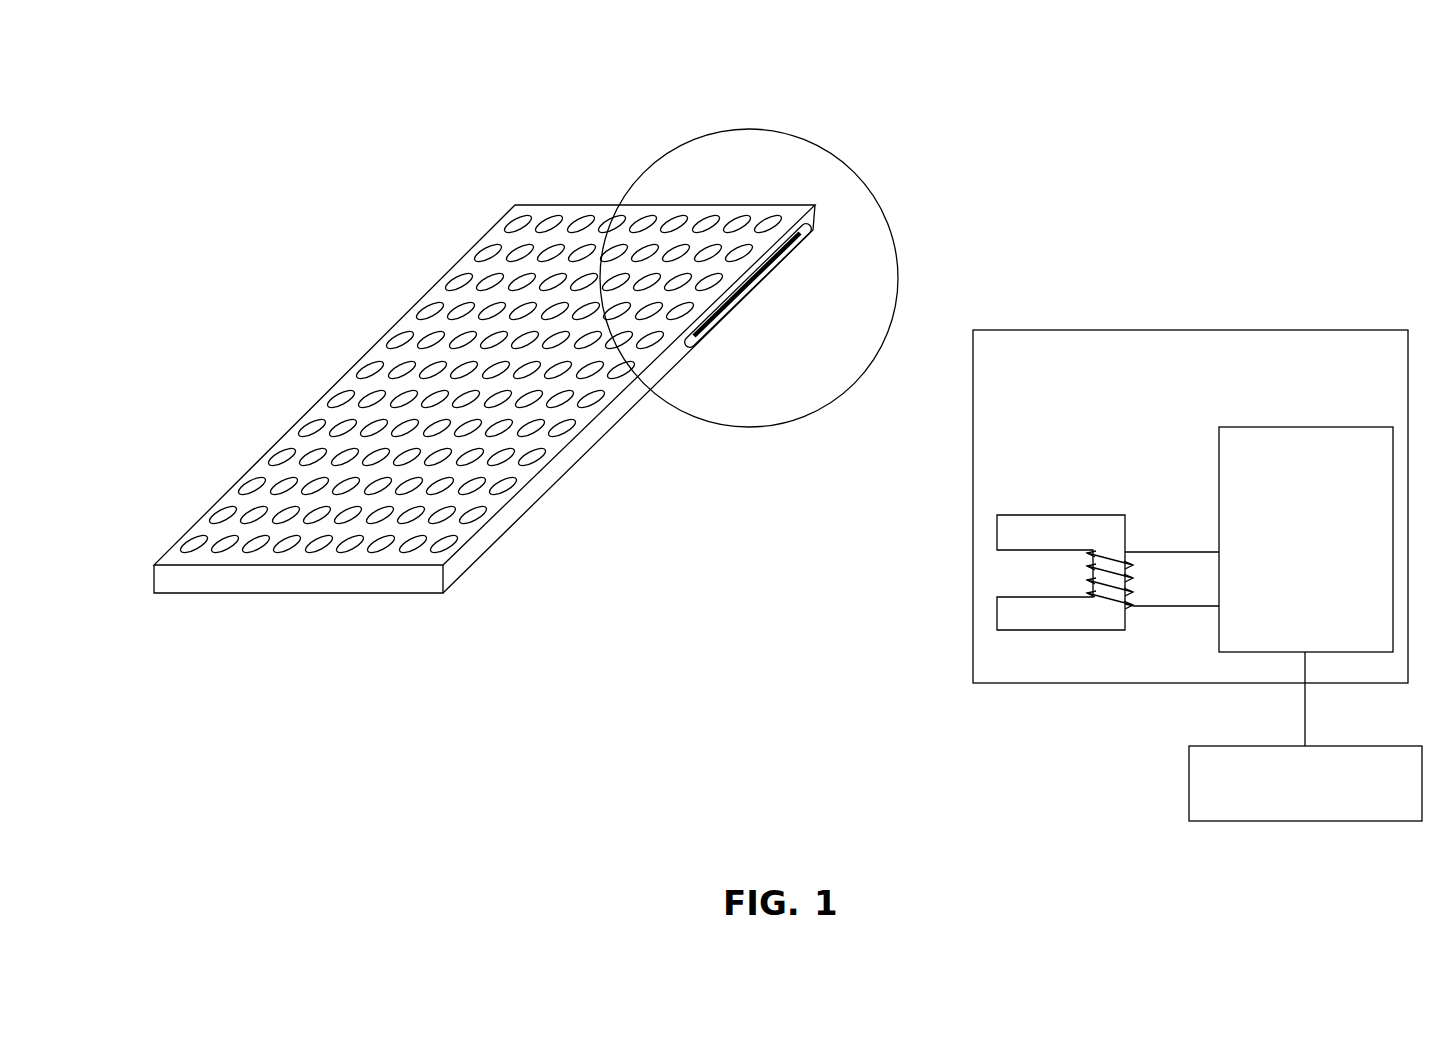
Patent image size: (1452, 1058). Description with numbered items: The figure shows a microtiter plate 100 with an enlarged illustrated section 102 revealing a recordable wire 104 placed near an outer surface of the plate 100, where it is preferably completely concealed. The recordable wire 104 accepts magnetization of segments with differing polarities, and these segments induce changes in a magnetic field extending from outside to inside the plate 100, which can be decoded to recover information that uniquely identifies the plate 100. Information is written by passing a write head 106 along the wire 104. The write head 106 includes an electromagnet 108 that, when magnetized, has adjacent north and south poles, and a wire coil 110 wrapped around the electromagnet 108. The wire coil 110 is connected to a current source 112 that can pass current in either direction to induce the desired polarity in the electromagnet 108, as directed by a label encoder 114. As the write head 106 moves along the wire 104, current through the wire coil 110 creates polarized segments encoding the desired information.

The microtiter plate 100 is at (317, 408).
The illustrated section 102 is at (775, 131).
The recordable wire 104 is at (754, 282).
The write head 106 is at (1027, 330).
The electromagnet 108 is at (1078, 544).
The wire coil 110 is at (1179, 552).
The current source 112 is at (1331, 554).
The label encoder 114 is at (1328, 810).